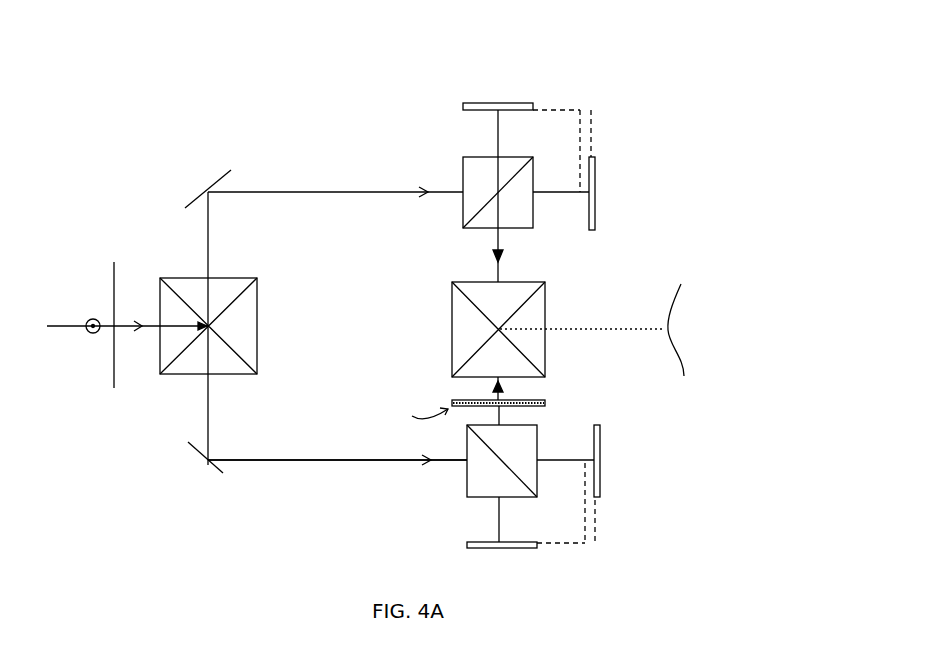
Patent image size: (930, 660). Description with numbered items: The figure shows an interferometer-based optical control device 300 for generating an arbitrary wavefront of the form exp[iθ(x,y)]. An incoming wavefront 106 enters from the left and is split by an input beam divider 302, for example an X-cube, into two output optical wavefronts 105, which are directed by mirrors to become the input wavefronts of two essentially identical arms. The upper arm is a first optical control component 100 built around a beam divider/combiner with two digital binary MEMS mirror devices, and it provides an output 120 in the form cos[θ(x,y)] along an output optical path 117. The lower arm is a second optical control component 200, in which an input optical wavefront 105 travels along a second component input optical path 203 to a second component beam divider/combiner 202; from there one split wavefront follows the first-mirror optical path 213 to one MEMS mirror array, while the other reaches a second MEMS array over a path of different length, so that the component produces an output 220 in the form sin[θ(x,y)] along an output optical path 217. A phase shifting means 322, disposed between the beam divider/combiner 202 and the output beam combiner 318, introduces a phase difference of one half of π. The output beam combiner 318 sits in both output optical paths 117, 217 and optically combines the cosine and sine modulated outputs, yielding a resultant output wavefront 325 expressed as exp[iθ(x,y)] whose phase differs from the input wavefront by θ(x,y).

The interferometer-based optical control device 300 is at (92, 100).
The first optical control component 100 is at (369, 130).
The second optical control component 200 is at (378, 516).
The output optical wavefront 105 is at (326, 321).
The incoming wavefront 106 is at (127, 325).
The input beam divider 302 is at (225, 326).
The output optical path 117 is at (496, 206).
The output 120 is at (514, 219).
The output beam combiner 318 is at (515, 329).
The output 220 is at (516, 388).
The phase shifting means 322 is at (548, 403).
The output optical path 217 is at (503, 416).
The second component beam divider/combiner 202 is at (531, 444).
The second component input optical path 203 is at (337, 470).
The M1_2 optical path 213 is at (517, 519).
The resultant output wavefront 325 is at (692, 326).